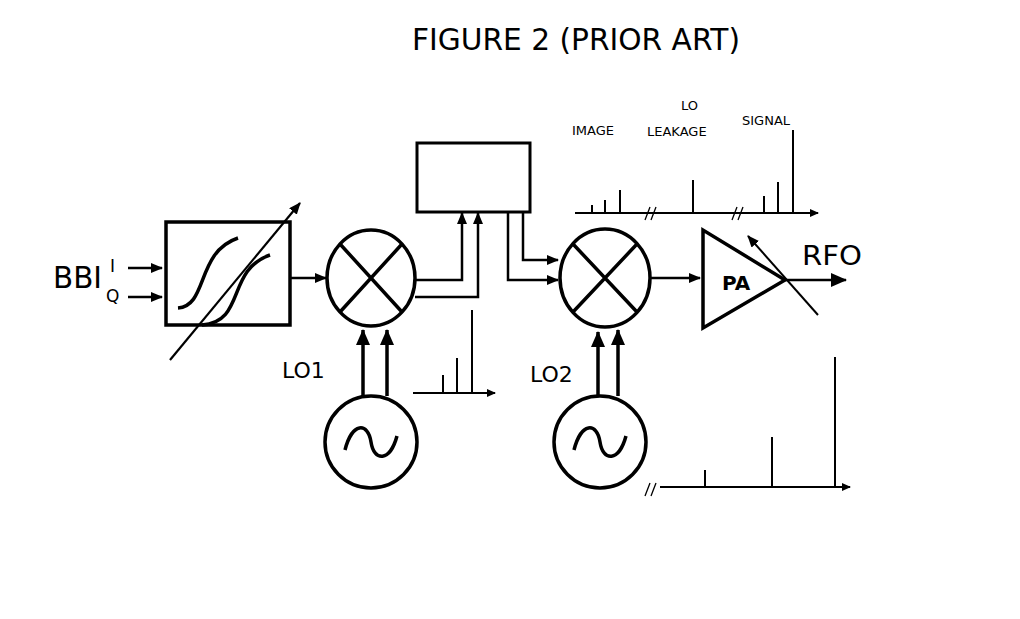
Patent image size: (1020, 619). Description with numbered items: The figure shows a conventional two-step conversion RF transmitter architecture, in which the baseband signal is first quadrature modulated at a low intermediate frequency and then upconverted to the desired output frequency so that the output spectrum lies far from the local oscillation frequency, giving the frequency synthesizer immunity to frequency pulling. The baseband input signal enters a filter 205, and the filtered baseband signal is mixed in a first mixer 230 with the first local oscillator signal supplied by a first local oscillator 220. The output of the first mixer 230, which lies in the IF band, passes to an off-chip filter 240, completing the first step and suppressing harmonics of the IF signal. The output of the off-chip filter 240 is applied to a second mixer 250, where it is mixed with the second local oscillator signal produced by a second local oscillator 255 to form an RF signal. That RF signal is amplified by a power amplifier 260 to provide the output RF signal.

The filter 205 is at (187, 220).
The first local oscillator 220 is at (330, 468).
The first mixer 230 is at (371, 229).
The off-chip filter 240 is at (472, 145).
The second mixer 250 is at (574, 306).
The second local oscillator 255 is at (592, 495).
The power amplifier 260 is at (777, 426).